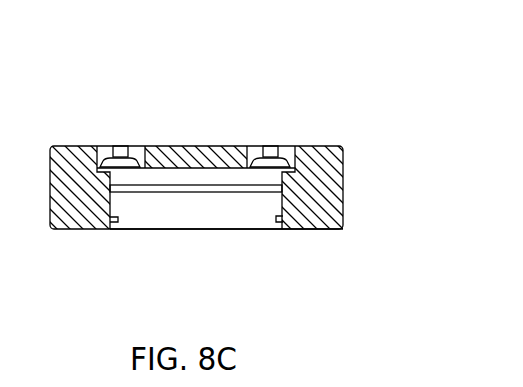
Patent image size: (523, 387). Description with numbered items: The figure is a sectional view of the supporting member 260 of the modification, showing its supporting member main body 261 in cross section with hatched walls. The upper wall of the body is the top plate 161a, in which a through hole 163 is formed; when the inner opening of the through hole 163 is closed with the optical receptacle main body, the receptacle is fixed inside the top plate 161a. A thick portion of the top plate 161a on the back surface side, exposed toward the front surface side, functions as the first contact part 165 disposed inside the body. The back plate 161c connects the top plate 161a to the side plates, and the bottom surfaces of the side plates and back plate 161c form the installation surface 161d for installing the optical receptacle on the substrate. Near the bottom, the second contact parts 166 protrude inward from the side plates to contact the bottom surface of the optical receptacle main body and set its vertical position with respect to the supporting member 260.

The supporting member 260 is at (359, 72).
The supporting member main body 261 is at (342, 188).
The top plate 161a is at (158, 147).
The through hole 163 is at (257, 147).
The first contact part 165 is at (112, 188).
The second contact part 166 is at (117, 224).
The back plate 161c is at (182, 229).
The installation surface 161d is at (318, 230).